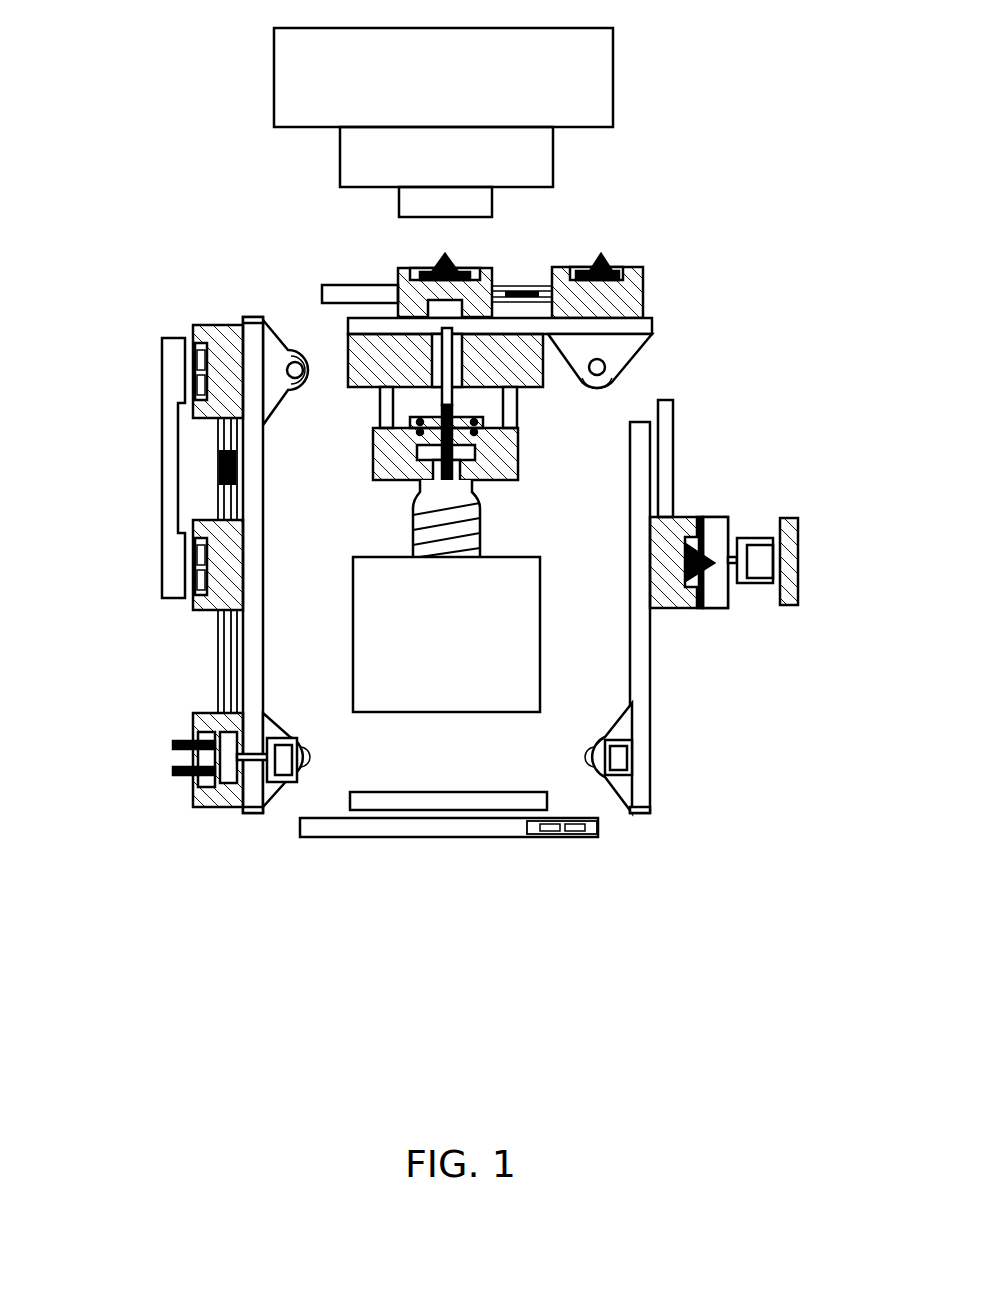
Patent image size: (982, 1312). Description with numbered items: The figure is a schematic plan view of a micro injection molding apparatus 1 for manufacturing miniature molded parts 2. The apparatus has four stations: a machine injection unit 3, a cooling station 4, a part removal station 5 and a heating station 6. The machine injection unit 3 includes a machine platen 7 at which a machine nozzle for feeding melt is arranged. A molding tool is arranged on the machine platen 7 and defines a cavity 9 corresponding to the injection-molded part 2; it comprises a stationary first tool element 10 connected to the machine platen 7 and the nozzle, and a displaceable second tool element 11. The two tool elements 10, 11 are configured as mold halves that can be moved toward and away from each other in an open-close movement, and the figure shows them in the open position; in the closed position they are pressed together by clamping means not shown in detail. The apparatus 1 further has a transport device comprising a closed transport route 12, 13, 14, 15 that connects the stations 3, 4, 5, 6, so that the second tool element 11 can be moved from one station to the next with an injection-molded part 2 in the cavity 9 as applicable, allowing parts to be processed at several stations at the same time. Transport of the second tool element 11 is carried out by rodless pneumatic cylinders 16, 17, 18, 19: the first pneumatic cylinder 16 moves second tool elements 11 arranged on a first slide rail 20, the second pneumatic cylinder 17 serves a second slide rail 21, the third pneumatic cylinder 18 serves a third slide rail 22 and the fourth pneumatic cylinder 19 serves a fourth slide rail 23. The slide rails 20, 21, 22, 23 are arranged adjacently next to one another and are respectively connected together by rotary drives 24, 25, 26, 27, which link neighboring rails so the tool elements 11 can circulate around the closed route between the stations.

The micro injection molding apparatus 1 is at (752, 1012).
The miniature molded part 2 is at (453, 262).
The machine injection unit 3 is at (280, 208).
The cooling station 4 is at (749, 450).
The part removal station 5 is at (183, 835).
The heating station 6 is at (158, 628).
The machine platen 7 is at (545, 158).
The cavity 9 is at (428, 260).
The first tool element 10 is at (492, 205).
The second tool element 11 is at (486, 283).
The transport route section 12 is at (520, 327).
The transport route section 13 is at (632, 537).
The transport route section 14 is at (432, 800).
The transport route section 15 is at (256, 537).
The first pneumatic cylinder 16 is at (333, 288).
The second pneumatic cylinder 17 is at (673, 450).
The third pneumatic cylinder 18 is at (441, 830).
The fourth pneumatic cylinder 19 is at (220, 670).
The first slide rail 20 is at (662, 322).
The second slide rail 21 is at (646, 828).
The third slide rail 22 is at (559, 850).
The fourth slide rail 23 is at (248, 308).
The rotary drive 24 is at (605, 404).
The rotary drive 25 is at (587, 712).
The rotary drive 26 is at (347, 745).
The rotary drive 27 is at (308, 412).